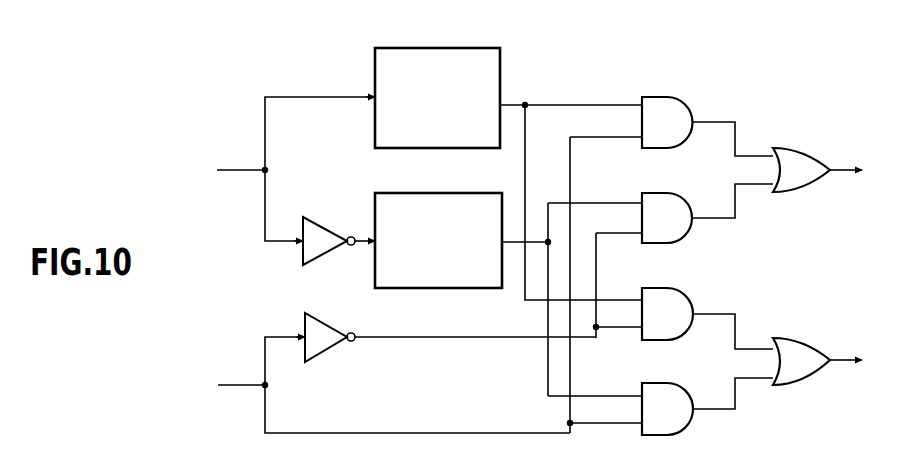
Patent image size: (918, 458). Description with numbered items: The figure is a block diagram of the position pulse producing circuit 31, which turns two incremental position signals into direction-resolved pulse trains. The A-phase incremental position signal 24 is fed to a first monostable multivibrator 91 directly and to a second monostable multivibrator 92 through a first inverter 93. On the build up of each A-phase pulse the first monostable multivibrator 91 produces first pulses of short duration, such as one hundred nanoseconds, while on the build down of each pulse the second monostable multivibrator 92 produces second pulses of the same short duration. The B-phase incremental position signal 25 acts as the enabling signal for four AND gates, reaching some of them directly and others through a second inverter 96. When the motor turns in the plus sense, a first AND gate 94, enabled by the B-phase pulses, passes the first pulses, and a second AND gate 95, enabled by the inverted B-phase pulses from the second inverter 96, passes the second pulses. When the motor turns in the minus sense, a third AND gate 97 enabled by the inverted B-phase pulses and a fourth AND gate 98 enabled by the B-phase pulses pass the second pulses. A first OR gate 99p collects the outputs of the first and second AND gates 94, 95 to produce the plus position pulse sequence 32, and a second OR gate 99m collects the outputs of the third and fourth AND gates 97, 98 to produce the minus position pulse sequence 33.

The A-phase incremental position signal 24 is at (222, 172).
The B-phase incremental position signal 25 is at (246, 382).
The position pulse producing circuit 31 is at (760, 103).
The plus position pulse sequence 32 is at (836, 172).
The minus position pulse sequence 33 is at (842, 362).
The first monostable multivibrator 91 is at (502, 70).
The second monostable multivibrator 92 is at (475, 193).
The first inverter 93 is at (326, 229).
The first AND gate 94 is at (672, 95).
The second AND gate 95 is at (680, 198).
The second inverter 96 is at (325, 352).
The third AND gate 97 is at (676, 290).
The fourth AND gate 98 is at (676, 385).
The first OR gate 99p is at (805, 190).
The second OR gate 99m is at (803, 382).